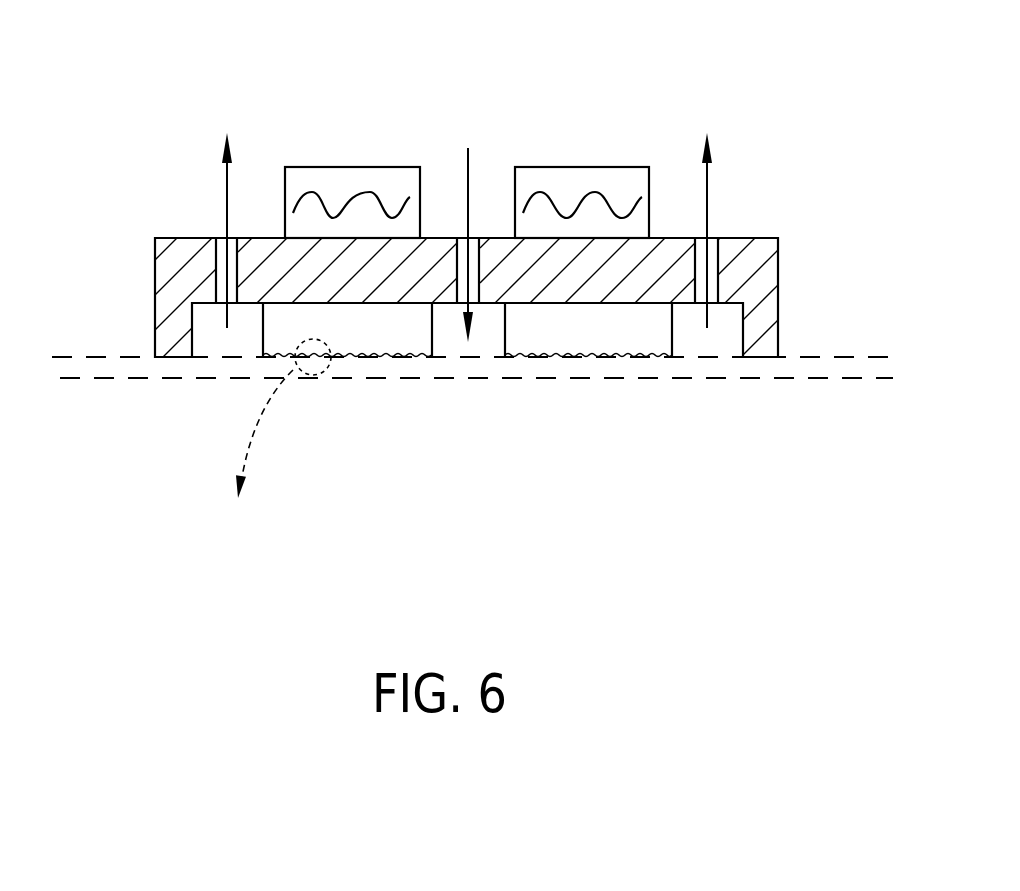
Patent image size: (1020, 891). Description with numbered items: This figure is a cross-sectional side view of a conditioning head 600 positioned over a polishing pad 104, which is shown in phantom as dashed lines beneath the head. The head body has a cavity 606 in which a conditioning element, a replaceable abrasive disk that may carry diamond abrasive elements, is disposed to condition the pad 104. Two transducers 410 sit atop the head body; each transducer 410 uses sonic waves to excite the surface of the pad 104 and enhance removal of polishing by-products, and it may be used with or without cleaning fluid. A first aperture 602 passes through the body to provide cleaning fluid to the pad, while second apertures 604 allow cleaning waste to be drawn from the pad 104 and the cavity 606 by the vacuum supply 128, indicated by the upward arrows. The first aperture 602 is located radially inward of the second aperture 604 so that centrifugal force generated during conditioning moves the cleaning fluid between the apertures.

The conditioning head 600 is at (807, 157).
The transducer 410 is at (352, 167).
The first aperture 602 is at (463, 238).
The second aperture 604 is at (703, 240).
The cavity 606 is at (213, 333).
The polishing pad 104 is at (95, 357).
The vacuum supply 128 is at (163, 181).